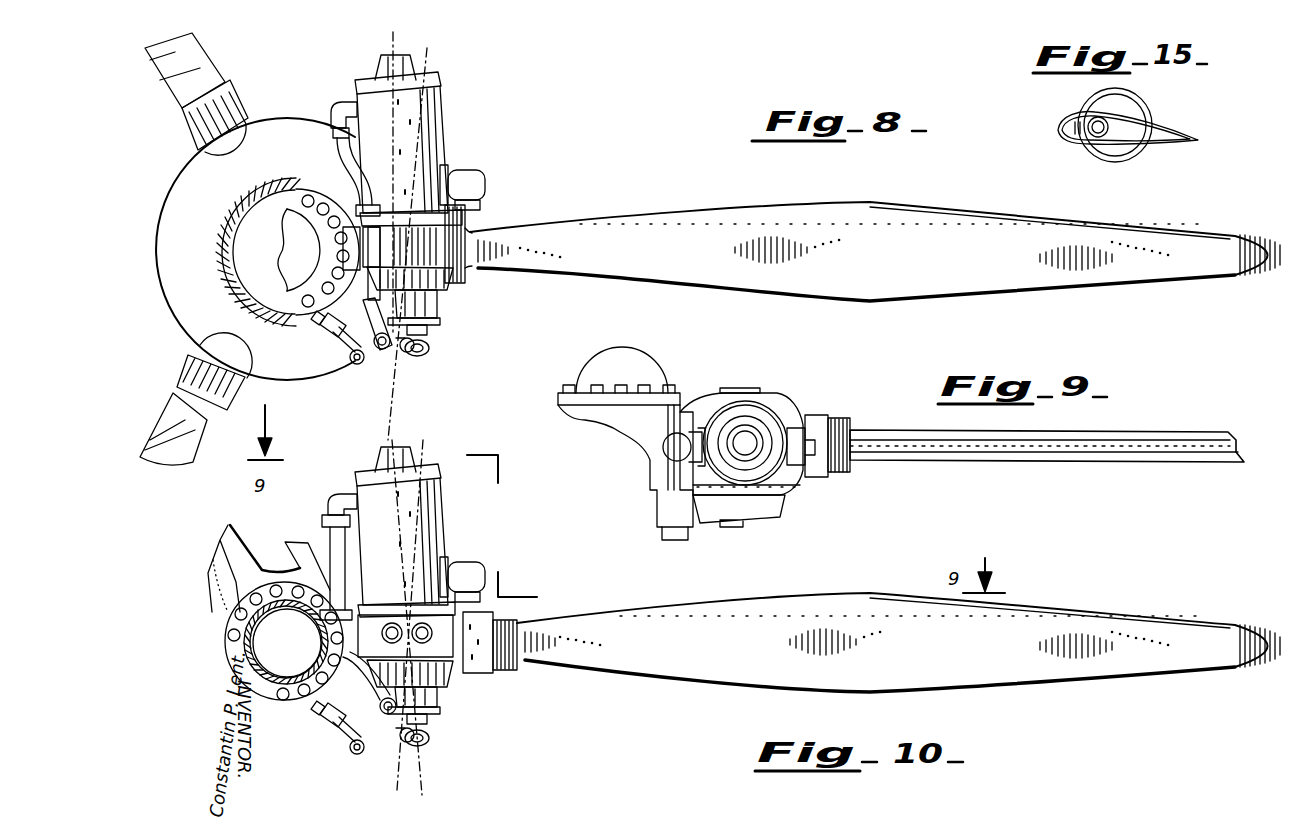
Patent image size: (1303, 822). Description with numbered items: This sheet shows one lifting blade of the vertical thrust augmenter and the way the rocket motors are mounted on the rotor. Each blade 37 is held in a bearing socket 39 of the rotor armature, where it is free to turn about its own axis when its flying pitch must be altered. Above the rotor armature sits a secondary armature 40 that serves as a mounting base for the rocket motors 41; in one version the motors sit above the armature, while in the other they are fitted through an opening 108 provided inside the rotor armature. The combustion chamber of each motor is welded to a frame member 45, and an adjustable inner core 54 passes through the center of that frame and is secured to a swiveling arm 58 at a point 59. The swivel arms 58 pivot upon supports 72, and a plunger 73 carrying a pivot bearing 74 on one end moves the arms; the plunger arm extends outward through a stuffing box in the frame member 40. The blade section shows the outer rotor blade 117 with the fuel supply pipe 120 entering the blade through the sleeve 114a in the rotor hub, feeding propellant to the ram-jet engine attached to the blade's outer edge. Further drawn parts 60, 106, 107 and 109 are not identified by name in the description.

In FIG. 8, the blade 37 is at (205, 80).
In FIG. 9, the blade 37 is at (884, 432).
In FIG. 10, the blade 37 is at (622, 612).
In FIG. 8, the bearing socket 39 is at (238, 112).
In FIG. 9, the bearing socket 39 is at (832, 413).
In FIG. 8, the secondary armature 40 is at (240, 189).
In FIG. 9, the secondary armature 40 is at (545, 393).
In FIG. 10, the secondary armature 40 is at (262, 552).
In FIG. 8, the rocket motor 41 is at (450, 132).
In FIG. 9, the rocket motor 41 is at (777, 408).
In FIG. 10, the rocket motor 41 is at (448, 543).
In FIG. 8, the frame member 45 is at (452, 280).
In FIG. 10, the frame member 45 is at (410, 692).
In FIG. 8, the adjustable inner core 54 is at (372, 68).
In FIG. 10, the adjustable inner core 54 is at (372, 472).
In FIG. 8, the swiveling arm 58 is at (397, 350).
In FIG. 10, the swiveling arm 58 is at (397, 740).
In FIG. 8, the attachment point 59 is at (430, 348).
In FIG. 10, the attachment point 59 is at (430, 740).
In FIG. 8, the pipe elbow 60 is at (335, 118).
In FIG. 9, the pipe elbow 60 is at (668, 450).
In FIG. 10, the pipe elbow 60 is at (330, 540).
In FIG. 8, the support 72 is at (348, 320).
In FIG. 10, the support 72 is at (296, 552).
In FIG. 8, the plunger 73 is at (345, 342).
In FIG. 10, the plunger 73 is at (345, 732).
In FIG. 8, the pivot bearing 74 is at (352, 362).
In FIG. 10, the pivot bearing 74 is at (352, 752).
In FIG. 8, the collar 106 is at (462, 236).
In FIG. 9, the collar 106 is at (808, 480).
In FIG. 8, the cylinder 107 is at (470, 170).
In FIG. 10, the cylinder 107 is at (478, 562).
In FIG. 9, the opening 108 is at (785, 490).
In FIG. 10, the opening 108 is at (463, 670).
In FIG. 10, the bracket 109 is at (240, 530).
In FIG. 15, the sleeve 114a is at (1080, 106).
In FIG. 15, the rotor blade 117 is at (1178, 128).
In FIG. 15, the fuel supply pipe 120 is at (1085, 140).